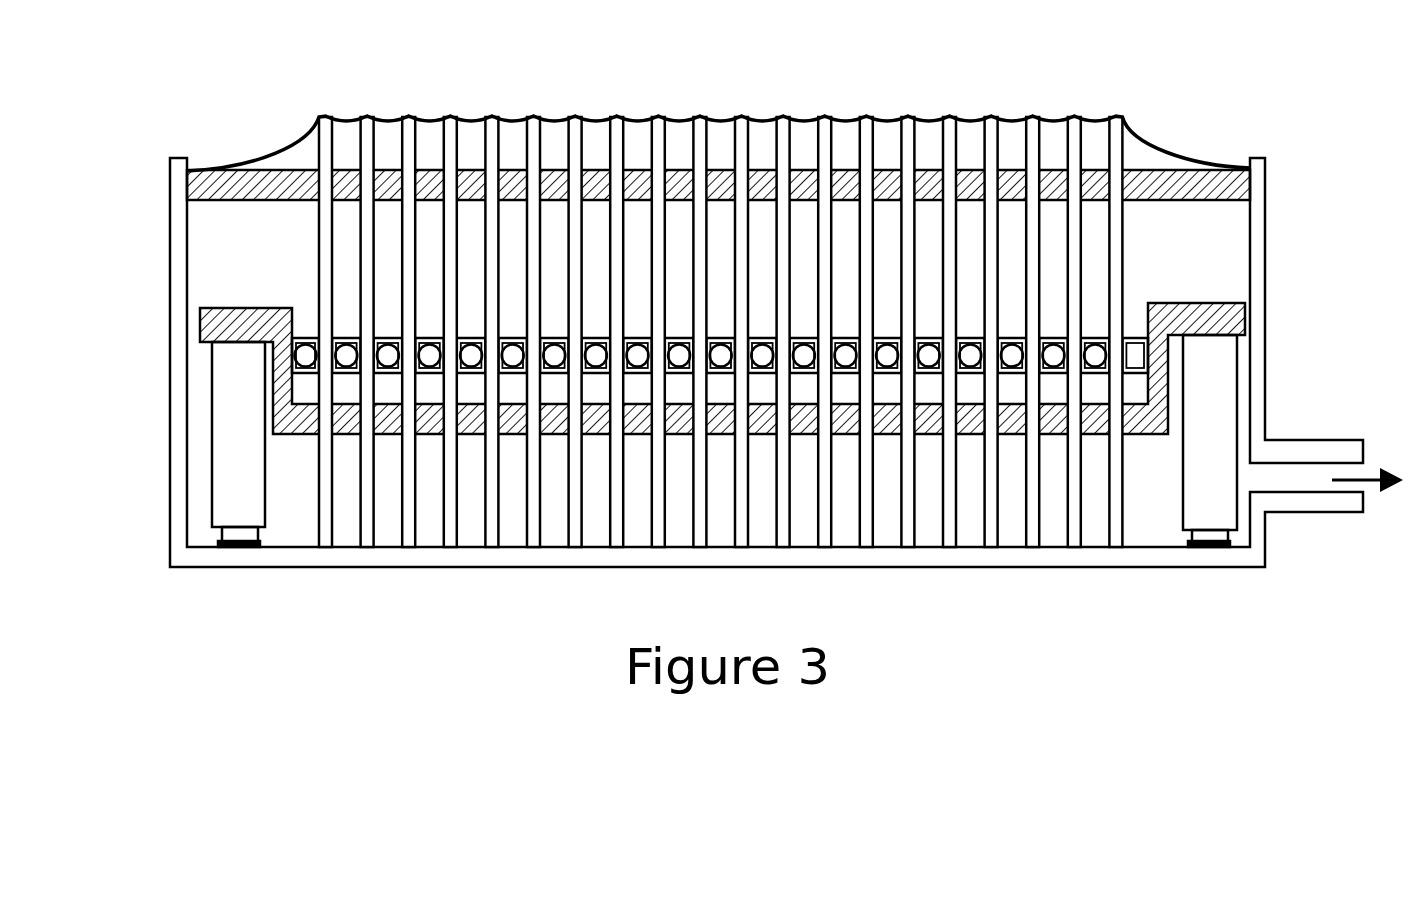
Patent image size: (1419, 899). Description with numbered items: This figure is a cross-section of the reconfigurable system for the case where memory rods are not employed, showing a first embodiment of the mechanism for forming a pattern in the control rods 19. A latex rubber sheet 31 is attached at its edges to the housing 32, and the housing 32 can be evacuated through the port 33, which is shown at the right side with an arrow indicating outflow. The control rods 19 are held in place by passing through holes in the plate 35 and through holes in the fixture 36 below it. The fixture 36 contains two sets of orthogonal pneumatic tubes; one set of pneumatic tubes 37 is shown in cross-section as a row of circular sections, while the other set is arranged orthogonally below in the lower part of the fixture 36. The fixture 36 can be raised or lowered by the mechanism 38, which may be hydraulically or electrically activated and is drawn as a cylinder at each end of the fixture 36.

The control rods 19 is at (700, 125).
The latex rubber sheet 31 is at (1158, 145).
The housing 32 is at (1260, 233).
The port 33 is at (1325, 450).
The plate 35 is at (1263, 162).
The fixture 36 is at (1243, 303).
The pneumatic tubes 37 is at (343, 340).
The mechanism 38 is at (230, 423).